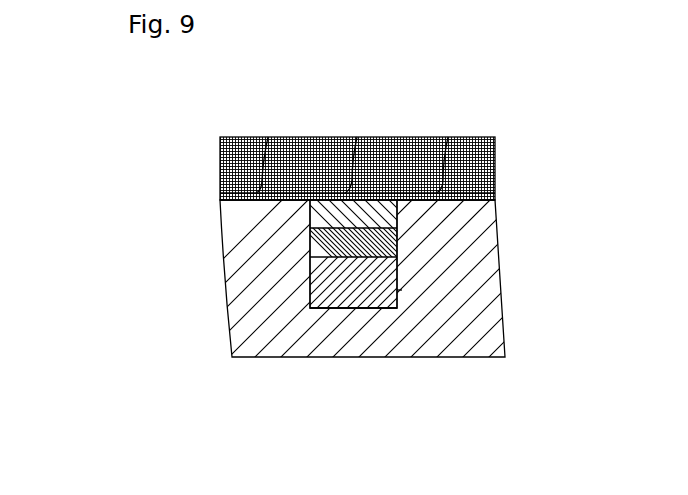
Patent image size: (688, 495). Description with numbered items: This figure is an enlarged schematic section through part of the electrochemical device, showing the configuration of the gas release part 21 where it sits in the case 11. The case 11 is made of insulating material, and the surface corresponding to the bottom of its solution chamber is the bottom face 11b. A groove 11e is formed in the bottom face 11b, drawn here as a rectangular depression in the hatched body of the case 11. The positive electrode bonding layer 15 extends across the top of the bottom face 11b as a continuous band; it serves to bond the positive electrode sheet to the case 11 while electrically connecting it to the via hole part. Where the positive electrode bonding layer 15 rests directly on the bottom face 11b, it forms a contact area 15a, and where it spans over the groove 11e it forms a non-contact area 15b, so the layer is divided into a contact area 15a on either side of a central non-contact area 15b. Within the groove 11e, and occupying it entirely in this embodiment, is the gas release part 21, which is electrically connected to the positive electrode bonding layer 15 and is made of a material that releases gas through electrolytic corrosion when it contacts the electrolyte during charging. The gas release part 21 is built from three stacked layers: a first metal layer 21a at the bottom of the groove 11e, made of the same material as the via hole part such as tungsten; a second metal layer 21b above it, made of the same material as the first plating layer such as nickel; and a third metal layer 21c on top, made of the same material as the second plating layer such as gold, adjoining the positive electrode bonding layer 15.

The case 11 is at (478, 262).
The bottom face 11b is at (470, 206).
The groove 11e is at (397, 290).
The positive electrode bonding layer 15 is at (483, 172).
The contact area 15a is at (268, 137).
The non-contact area 15b is at (357, 137).
The gas release part 21 is at (161, 190).
The first metal layer 21a is at (307, 282).
The second metal layer 21b is at (307, 248).
The third metal layer 21c is at (307, 217).